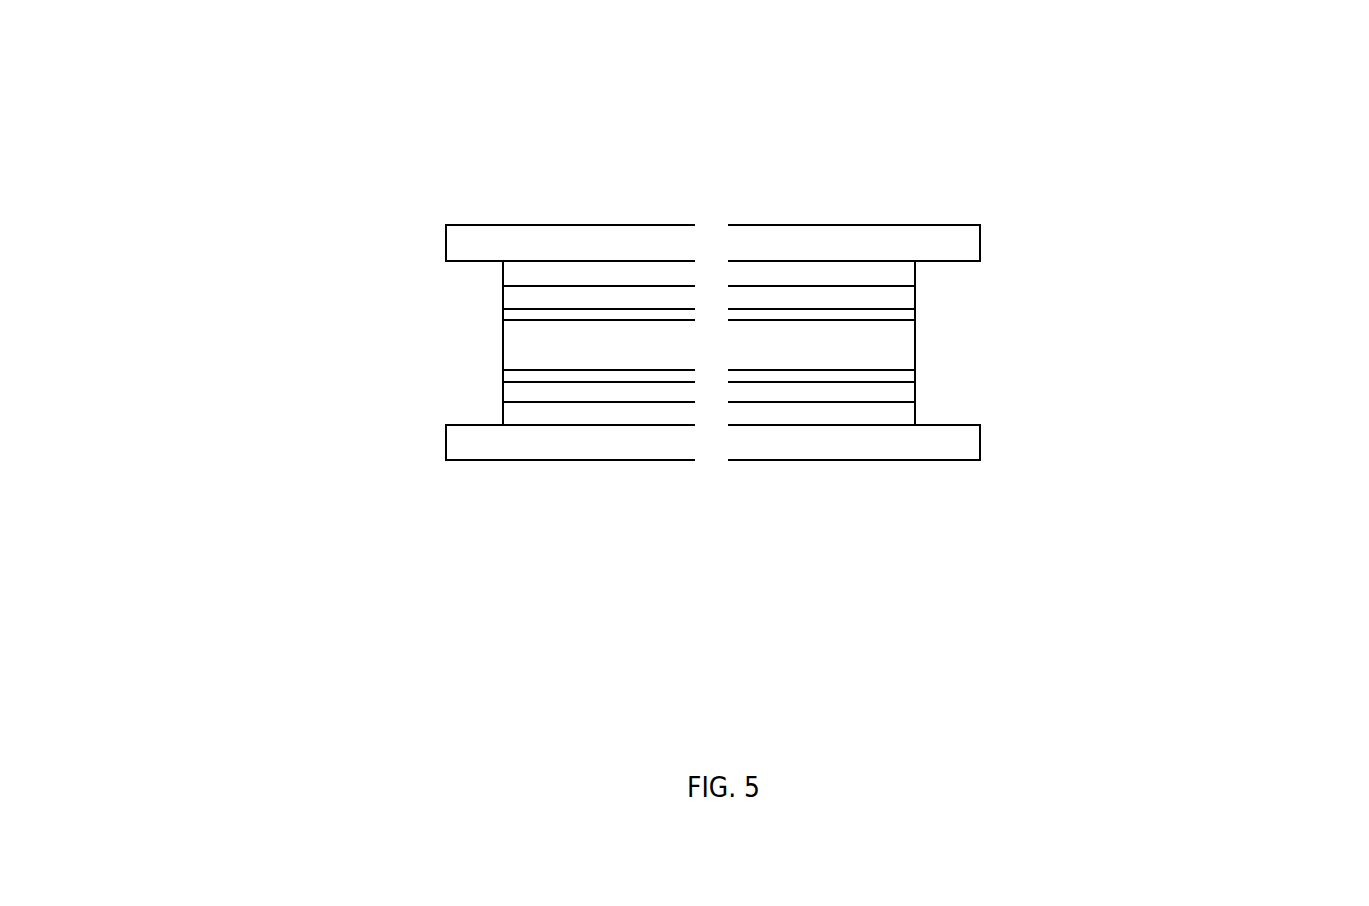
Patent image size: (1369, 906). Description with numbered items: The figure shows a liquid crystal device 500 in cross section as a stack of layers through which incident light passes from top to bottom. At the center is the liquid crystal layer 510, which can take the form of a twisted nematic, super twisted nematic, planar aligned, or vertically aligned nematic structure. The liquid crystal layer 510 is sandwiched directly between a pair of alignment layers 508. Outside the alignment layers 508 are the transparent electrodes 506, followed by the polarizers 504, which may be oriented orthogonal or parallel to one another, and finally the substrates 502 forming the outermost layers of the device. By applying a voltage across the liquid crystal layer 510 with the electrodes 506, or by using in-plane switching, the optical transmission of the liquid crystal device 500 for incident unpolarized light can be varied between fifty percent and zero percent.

The liquid crystal device 500 is at (945, 52).
The substrate 502 is at (980, 243).
The polarizer 504 is at (916, 275).
The transparent electrode 506 is at (916, 300).
The alignment layer 508 is at (503, 375).
The liquid crystal layer 510 is at (503, 345).